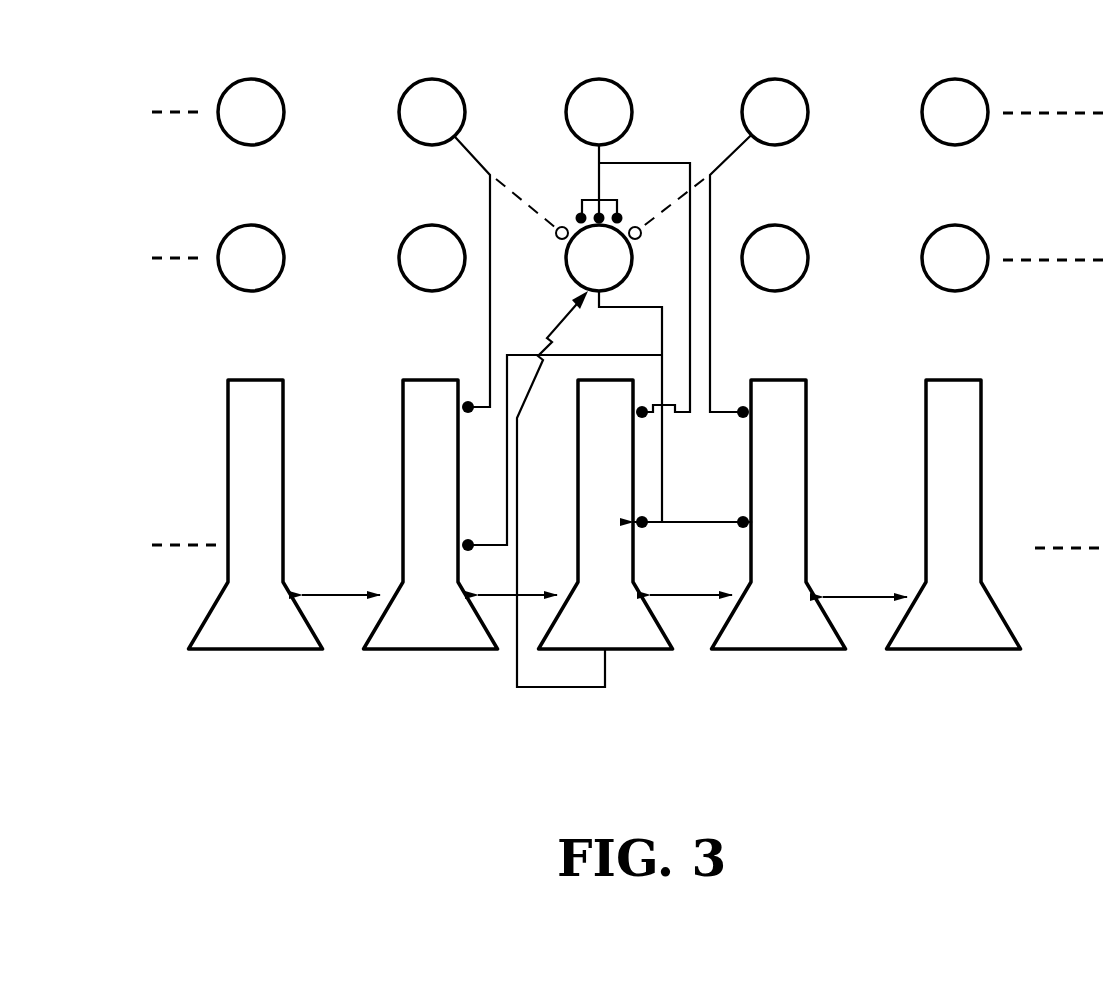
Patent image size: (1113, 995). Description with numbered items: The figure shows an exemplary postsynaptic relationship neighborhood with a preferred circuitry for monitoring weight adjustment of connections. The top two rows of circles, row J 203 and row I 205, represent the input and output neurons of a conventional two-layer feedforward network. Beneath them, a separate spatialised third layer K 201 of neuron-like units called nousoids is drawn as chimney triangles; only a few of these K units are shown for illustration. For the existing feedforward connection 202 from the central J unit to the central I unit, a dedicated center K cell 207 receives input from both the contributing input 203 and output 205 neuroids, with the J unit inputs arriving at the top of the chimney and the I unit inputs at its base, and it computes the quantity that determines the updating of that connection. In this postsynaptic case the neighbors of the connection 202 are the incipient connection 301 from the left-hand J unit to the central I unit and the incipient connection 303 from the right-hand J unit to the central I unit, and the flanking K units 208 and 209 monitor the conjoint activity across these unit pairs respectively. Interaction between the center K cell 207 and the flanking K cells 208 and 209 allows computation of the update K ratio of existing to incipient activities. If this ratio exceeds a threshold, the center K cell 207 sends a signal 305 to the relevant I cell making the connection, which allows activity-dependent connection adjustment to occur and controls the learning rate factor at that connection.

The third layer K of neuron-like units 201 is at (86, 545).
The J0 to I0 connection 202 is at (598, 157).
The input layer J 203 is at (84, 103).
The output layer I 205 is at (82, 250).
The center K cell 207 is at (615, 650).
The flanking K unit 208 is at (422, 650).
The flanking K unit 209 is at (788, 652).
The J-1 to I0 connection 301 is at (466, 152).
The J1 to I0 connection 303 is at (732, 160).
The signal 305 is at (555, 688).